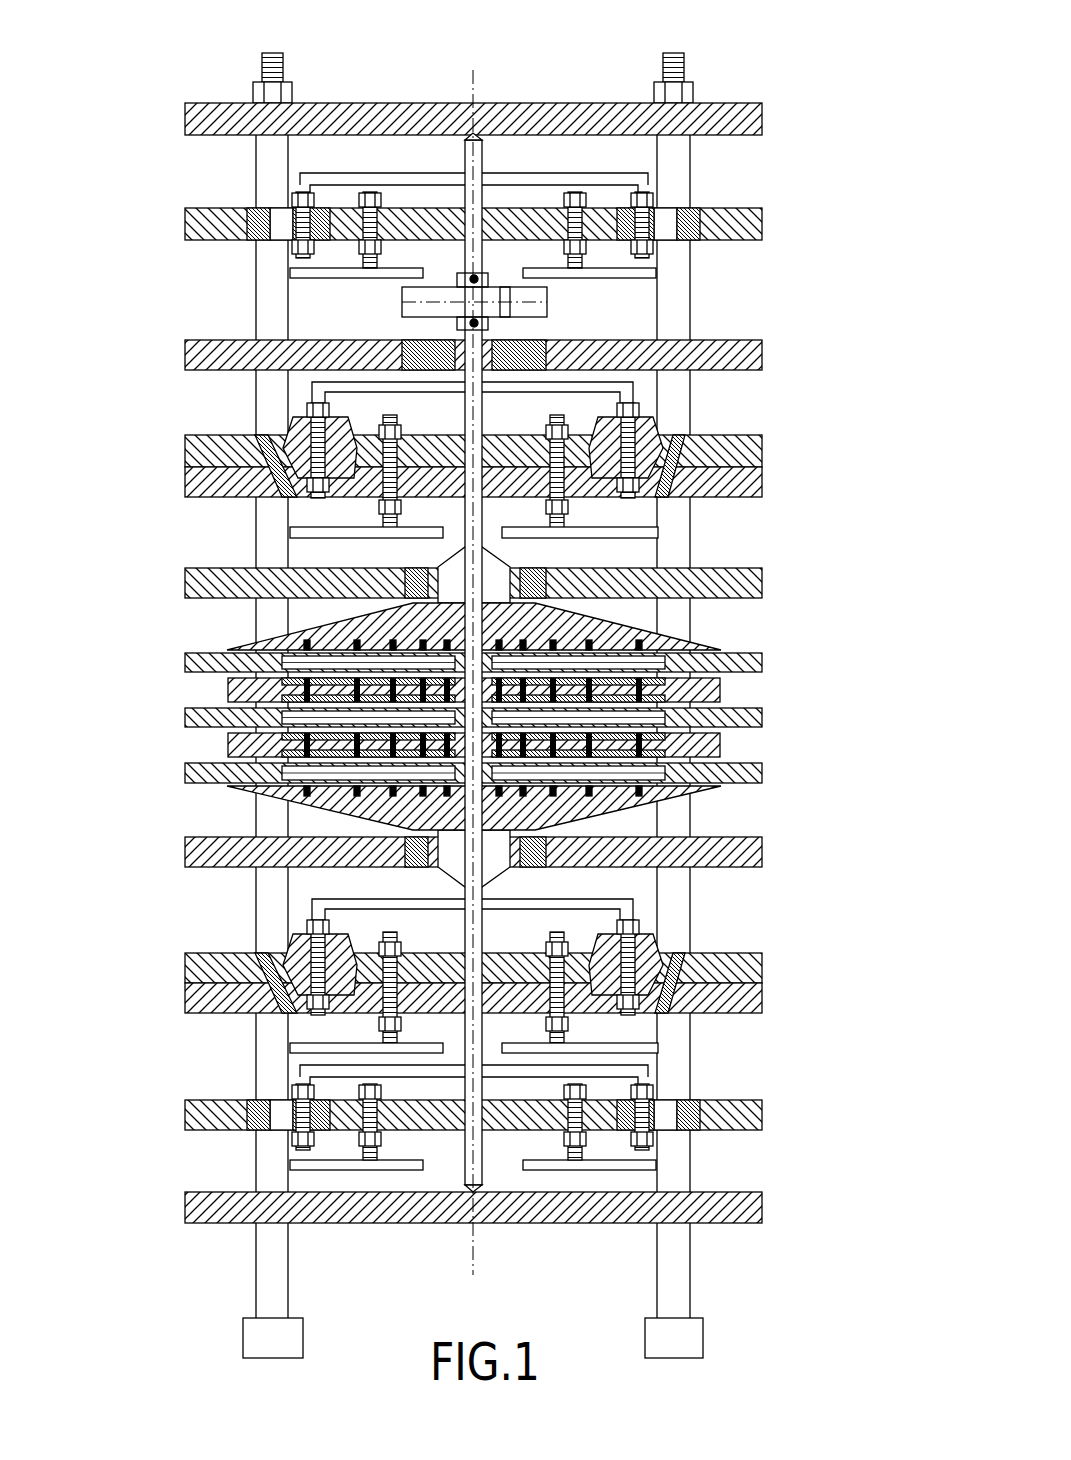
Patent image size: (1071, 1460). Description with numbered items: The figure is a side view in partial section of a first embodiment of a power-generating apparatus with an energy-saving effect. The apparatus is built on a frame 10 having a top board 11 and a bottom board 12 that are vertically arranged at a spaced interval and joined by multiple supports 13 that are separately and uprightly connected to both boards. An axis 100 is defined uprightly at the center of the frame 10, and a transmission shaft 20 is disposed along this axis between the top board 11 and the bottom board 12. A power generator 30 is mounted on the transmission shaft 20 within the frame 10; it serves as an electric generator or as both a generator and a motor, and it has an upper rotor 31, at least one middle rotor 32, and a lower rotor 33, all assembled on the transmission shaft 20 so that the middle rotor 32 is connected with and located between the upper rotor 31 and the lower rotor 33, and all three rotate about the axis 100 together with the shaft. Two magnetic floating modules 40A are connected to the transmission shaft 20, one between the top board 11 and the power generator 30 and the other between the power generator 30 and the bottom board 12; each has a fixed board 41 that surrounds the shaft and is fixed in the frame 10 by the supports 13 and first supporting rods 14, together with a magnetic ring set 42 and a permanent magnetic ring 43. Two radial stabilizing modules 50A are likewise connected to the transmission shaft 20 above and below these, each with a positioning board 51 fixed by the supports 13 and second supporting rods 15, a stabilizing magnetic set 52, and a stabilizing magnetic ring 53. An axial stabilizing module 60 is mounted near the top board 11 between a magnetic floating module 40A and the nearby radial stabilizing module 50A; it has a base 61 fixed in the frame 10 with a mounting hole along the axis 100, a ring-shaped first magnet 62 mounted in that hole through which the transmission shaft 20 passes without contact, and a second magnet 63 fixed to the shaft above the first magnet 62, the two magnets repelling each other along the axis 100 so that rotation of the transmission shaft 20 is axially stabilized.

The frame 10 is at (483, 683).
The top board 11 is at (593, 108).
The bottom board 12 is at (560, 1220).
The supports 13 is at (262, 177).
The first supporting rods 14 is at (318, 534).
The second supporting rods 15 is at (605, 270).
The transmission shaft 20 is at (467, 160).
The axis 100 is at (476, 84).
The power generator 30 is at (538, 718).
The upper rotor 31 is at (652, 623).
The middle rotor 32 is at (736, 693).
The lower rotor 33 is at (652, 806).
The magnetic floating module 40A is at (483, 717).
The fixed board 41 is at (182, 457).
The magnetic ring set 42 is at (255, 432).
The permanent magnetic ring 43 is at (295, 410).
The radial stabilizing module 50A is at (494, 589).
The positioning board 51 is at (185, 218).
The stabilizing magnetic set 52 is at (258, 246).
The stabilizing magnetic ring 53 is at (324, 200).
The axial stabilizing module 60 is at (562, 305).
The base 61 is at (765, 352).
The first magnet 62 is at (525, 346).
The second magnet 63 is at (505, 290).